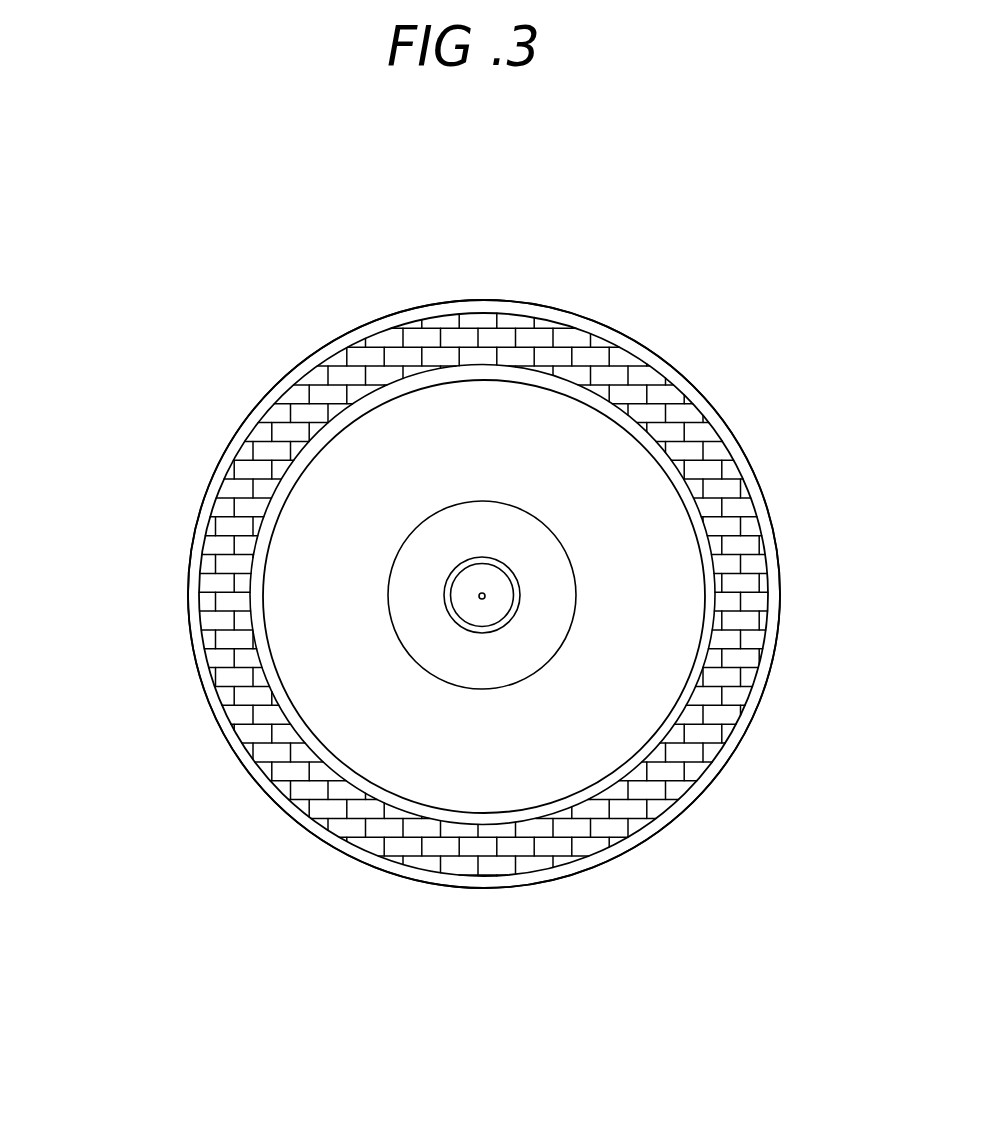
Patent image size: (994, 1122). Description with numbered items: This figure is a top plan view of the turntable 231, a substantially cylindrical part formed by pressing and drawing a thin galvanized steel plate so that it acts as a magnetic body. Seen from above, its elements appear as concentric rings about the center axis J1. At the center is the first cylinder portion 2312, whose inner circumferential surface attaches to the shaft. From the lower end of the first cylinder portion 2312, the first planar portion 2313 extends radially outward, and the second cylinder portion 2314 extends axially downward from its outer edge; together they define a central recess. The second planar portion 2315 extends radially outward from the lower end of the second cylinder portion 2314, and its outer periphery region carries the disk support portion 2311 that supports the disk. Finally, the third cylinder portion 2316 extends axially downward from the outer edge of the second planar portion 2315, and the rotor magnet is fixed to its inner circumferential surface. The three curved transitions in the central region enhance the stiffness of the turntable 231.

The turntable 231 is at (148, 352).
The disk support portion 2311 is at (243, 508).
The first cylinder portion 2312 is at (453, 578).
The first planar portion 2313 is at (413, 603).
The second cylinder portion 2314 is at (482, 693).
The second planar portion 2315 is at (560, 473).
The third cylinder portion 2316 is at (745, 463).
The central axis J1 is at (485, 599).